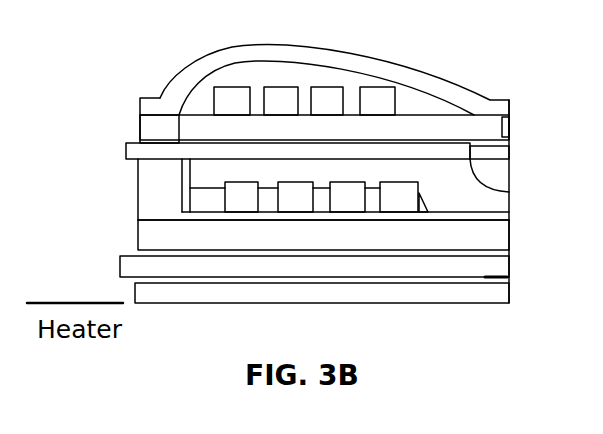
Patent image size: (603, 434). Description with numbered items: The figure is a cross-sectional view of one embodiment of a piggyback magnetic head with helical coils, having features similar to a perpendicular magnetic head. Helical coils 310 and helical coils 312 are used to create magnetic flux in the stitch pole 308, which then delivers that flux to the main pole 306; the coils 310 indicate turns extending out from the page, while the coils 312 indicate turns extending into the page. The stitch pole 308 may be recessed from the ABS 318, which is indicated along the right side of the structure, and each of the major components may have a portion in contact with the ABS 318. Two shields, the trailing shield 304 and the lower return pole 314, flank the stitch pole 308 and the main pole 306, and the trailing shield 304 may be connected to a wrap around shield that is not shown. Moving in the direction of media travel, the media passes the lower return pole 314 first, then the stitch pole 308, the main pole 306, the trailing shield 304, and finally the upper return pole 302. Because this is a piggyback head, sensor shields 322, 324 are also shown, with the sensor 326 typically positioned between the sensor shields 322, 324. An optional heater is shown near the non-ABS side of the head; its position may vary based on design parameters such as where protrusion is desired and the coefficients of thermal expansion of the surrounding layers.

The upper return pole 302 is at (450, 70).
The trailing shield 304 is at (512, 127).
The main pole 306 is at (510, 146).
The stitch pole 308 is at (500, 190).
The helical coils 310 is at (160, 98).
The helical coils 312 is at (225, 182).
The lower return pole 314 is at (358, 242).
The ABS 318 is at (509, 223).
The sensor shield 322 is at (120, 262).
The sensor shield 324 is at (133, 290).
The sensor 326 is at (500, 275).